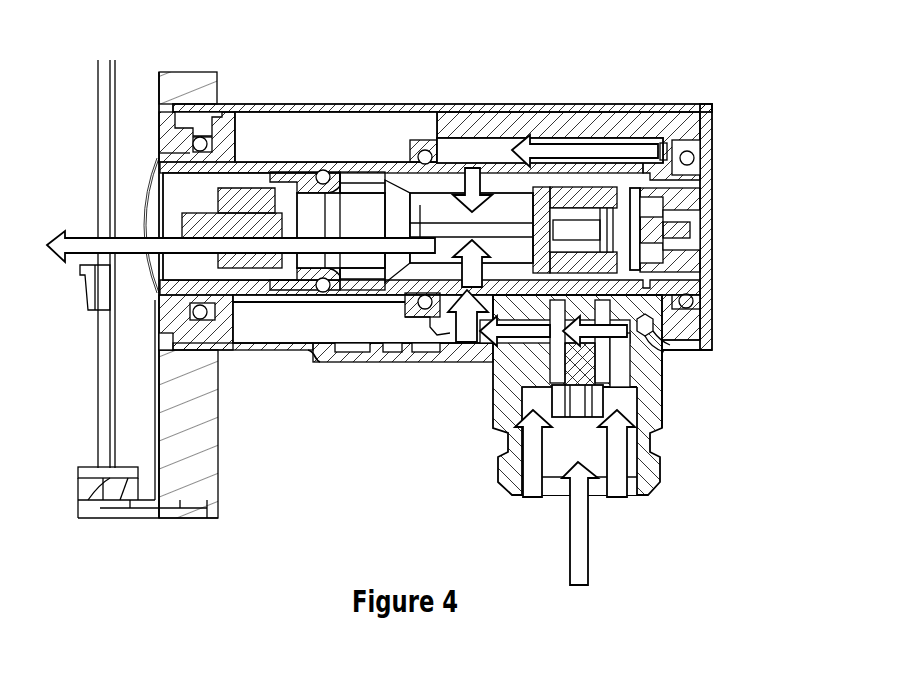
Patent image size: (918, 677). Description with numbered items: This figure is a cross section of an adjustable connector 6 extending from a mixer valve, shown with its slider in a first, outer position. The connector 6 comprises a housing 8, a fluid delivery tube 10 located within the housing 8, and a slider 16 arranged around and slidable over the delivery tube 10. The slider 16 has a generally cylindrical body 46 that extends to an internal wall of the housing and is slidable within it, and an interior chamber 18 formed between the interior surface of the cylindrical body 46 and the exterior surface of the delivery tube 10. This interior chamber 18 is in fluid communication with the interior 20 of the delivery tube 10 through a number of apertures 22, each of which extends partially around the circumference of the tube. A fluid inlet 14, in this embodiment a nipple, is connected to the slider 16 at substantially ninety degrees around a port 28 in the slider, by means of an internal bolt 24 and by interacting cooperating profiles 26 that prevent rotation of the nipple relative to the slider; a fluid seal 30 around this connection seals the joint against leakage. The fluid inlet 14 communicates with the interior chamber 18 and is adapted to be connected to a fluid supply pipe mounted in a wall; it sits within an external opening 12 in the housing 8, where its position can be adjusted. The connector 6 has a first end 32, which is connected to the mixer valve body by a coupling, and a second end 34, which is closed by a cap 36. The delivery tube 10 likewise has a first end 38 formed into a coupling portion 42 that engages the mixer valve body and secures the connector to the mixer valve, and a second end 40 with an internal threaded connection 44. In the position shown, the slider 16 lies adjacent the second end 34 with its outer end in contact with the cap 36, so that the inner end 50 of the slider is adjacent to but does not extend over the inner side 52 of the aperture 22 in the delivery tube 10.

The connector 6 is at (478, 96).
The housing 8 is at (300, 106).
The fluid delivery tube 10 is at (168, 160).
The external opening 12 is at (457, 277).
The fluid inlet 14 is at (650, 480).
The slider 16 is at (594, 128).
The interior chamber 18 is at (460, 153).
The interior 20 is at (178, 198).
The apertures 22 is at (424, 150).
The internal bolt 24 is at (598, 397).
The cooperating profiles 26 is at (665, 328).
The port 28 is at (660, 322).
The fluid seal 30 is at (650, 333).
The first end 32 is at (158, 100).
The second end 34 is at (707, 92).
The cap 36 is at (712, 162).
The first end 38 is at (155, 284).
The second end 40 is at (692, 270).
The coupling portion 42 is at (200, 314).
The internal threaded connection 44 is at (697, 305).
The cylindrical body 46 is at (543, 128).
The inner end 50 is at (437, 182).
The inner side 52 is at (405, 178).